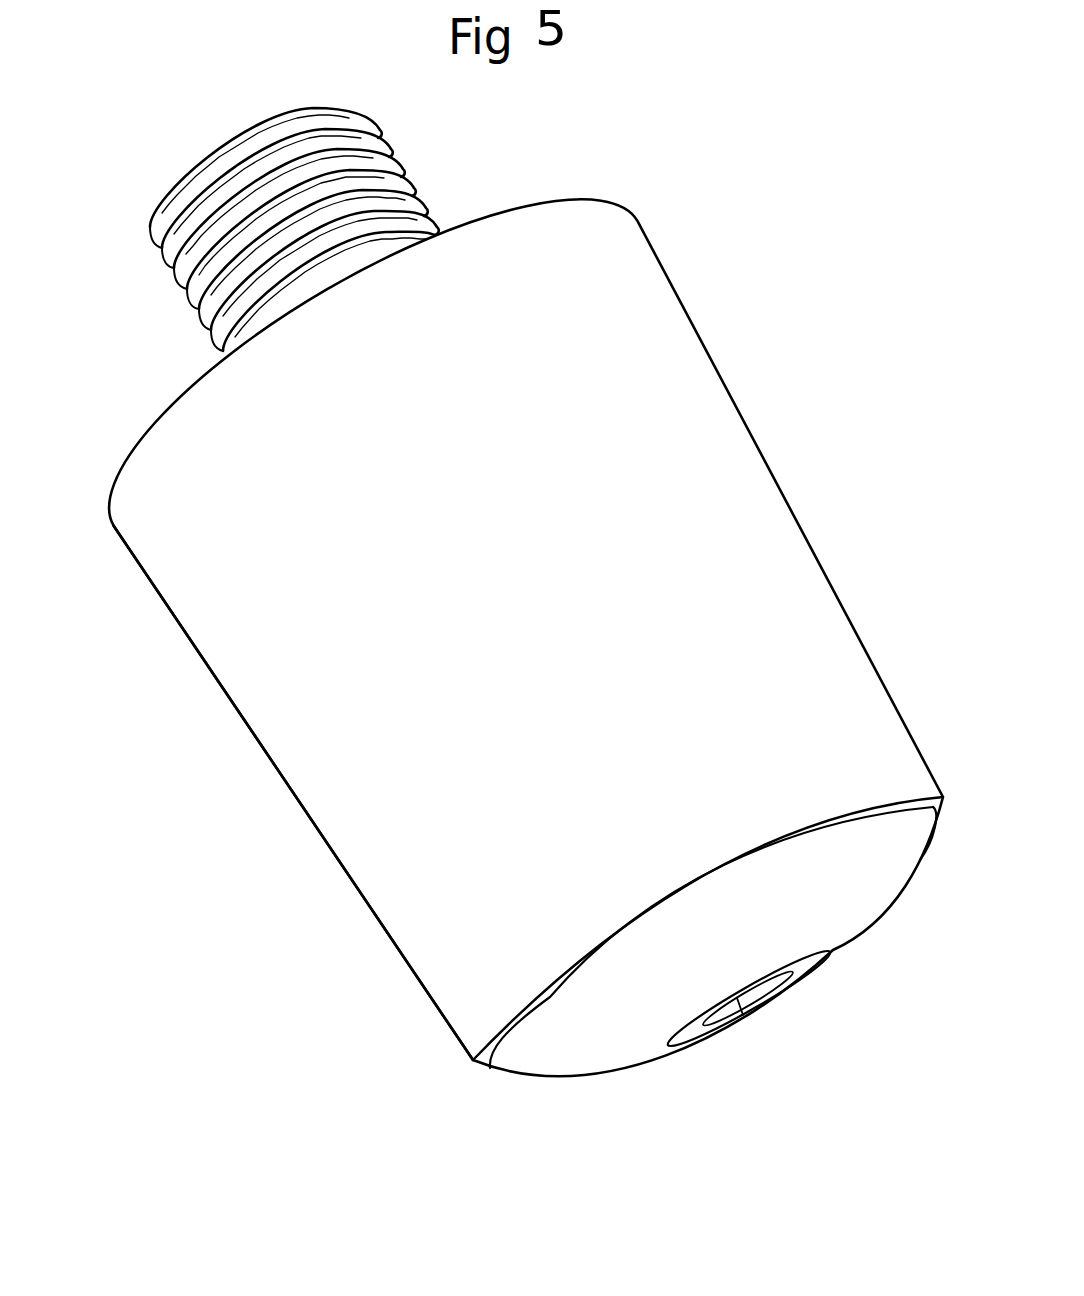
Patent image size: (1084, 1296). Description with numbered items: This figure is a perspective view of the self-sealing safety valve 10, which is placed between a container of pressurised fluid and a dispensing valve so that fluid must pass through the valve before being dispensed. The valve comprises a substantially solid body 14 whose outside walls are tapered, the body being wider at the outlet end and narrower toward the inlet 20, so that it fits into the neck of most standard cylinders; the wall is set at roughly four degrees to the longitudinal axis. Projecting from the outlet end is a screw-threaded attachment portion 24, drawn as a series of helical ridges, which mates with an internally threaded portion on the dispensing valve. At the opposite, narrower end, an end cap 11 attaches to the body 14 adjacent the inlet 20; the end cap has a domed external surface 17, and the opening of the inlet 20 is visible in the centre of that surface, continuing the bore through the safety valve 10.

The self-sealing safety valve 10 is at (147, 722).
The end cap 11 is at (548, 1067).
The body 14 is at (332, 802).
The domed external surface 17 is at (733, 942).
The inlet 20 is at (740, 1015).
The screw-threaded attachment portion 24 is at (400, 162).